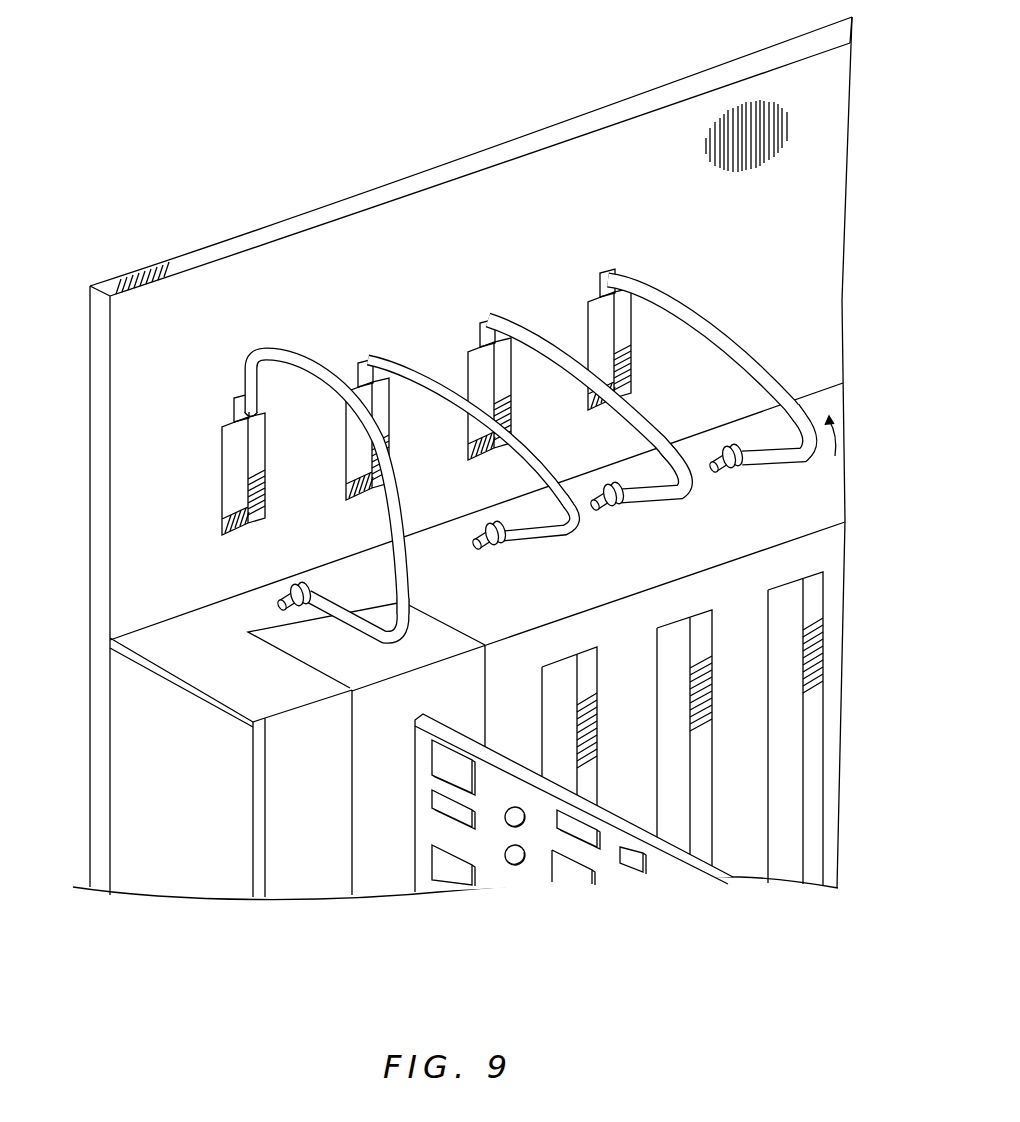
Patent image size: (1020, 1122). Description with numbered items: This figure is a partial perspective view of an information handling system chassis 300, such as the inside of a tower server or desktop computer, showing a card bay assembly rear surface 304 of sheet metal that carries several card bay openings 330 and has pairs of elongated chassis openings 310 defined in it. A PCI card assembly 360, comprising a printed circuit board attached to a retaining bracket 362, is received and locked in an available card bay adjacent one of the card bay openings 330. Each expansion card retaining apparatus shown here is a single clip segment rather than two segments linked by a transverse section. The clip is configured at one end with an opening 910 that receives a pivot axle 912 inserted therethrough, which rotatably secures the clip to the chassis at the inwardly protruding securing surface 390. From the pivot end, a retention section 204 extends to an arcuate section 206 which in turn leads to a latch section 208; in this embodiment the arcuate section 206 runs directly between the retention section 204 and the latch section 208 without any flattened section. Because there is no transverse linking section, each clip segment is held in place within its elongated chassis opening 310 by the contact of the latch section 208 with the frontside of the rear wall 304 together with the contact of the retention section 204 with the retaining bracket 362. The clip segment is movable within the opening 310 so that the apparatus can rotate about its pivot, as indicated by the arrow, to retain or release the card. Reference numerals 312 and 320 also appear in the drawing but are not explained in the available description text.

The information handling system chassis 300 is at (727, 38).
The card bay assembly rear surface 304 is at (135, 357).
The latch section 208 is at (246, 408).
The arcuate section 206 is at (276, 356).
The mounting tab 312 is at (236, 402).
The elongated chassis opening 310 is at (297, 457).
The opening 910 is at (297, 588).
The pivot axle 912 is at (282, 604).
The retention section 204 is at (337, 613).
The inwardly protruding securing surface 390 is at (135, 638).
The retaining bracket 362 is at (323, 652).
The PCI card assembly 360 is at (493, 868).
The card bay opening 330 is at (568, 690).
The cabinet 320 is at (830, 852).